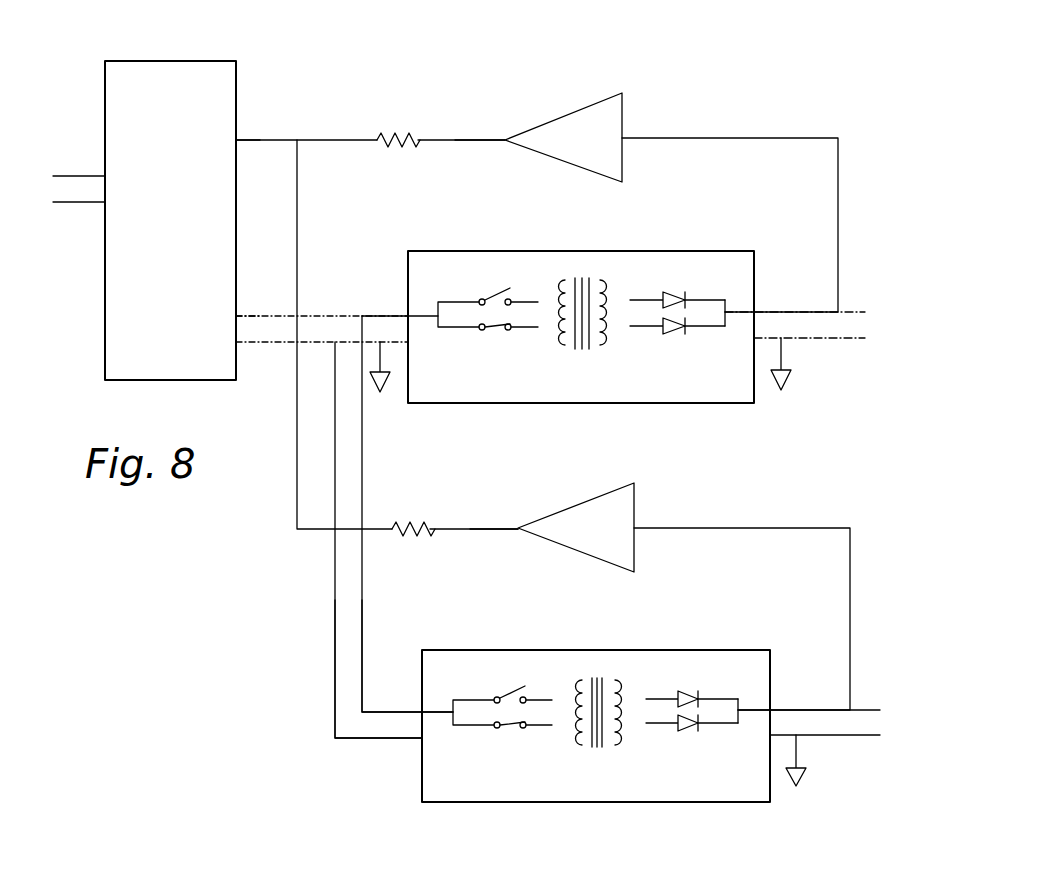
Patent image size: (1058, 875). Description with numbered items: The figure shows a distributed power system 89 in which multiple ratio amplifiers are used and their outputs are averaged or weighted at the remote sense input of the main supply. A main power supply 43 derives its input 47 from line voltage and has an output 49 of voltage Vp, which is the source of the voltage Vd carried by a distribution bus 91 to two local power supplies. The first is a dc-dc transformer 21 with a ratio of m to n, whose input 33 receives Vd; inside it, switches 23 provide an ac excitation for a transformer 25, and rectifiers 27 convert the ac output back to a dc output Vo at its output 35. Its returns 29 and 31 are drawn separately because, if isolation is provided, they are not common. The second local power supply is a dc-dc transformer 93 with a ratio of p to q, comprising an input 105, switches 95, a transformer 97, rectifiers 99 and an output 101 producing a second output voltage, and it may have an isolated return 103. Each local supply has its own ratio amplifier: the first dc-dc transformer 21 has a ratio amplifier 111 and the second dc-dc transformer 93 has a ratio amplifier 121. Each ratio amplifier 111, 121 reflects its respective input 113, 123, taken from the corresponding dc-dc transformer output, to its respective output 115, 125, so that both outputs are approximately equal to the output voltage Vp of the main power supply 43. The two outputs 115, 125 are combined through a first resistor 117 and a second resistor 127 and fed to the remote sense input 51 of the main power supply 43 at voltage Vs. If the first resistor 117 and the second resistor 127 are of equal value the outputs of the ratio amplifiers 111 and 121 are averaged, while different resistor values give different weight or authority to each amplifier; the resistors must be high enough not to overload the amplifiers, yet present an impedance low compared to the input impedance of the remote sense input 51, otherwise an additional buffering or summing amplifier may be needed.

The distributed power system 89 is at (88, 55).
The main power supply 43 is at (190, 55).
The input 47 is at (102, 167).
The remote sense input 51 is at (248, 120).
The output 49 is at (245, 308).
The resistor R1 117 is at (420, 117).
The output 115 is at (514, 118).
The ratio amplifier 111 is at (584, 96).
The input 113 is at (634, 116).
The dc-dc transformer 21 is at (415, 222).
The input 33 is at (400, 300).
The switches 23 is at (490, 280).
The transformer 25 is at (590, 262).
The rectifiers 27 is at (676, 260).
The output 35 is at (760, 300).
The return 29 is at (390, 402).
The return 31 is at (792, 362).
The resistor R2 127 is at (440, 512).
The output 125 is at (500, 518).
The ratio amplifier 121 is at (561, 500).
The input 123 is at (638, 518).
The second dc-dc transformer 93 is at (432, 622).
The switches 95 is at (497, 678).
The transformer 97 is at (599, 648).
The rectifiers 99 is at (700, 675).
The output 101 is at (791, 698).
The isolated return 103 is at (820, 755).
The distribution bus 91 is at (325, 688).
The input 105 is at (410, 748).